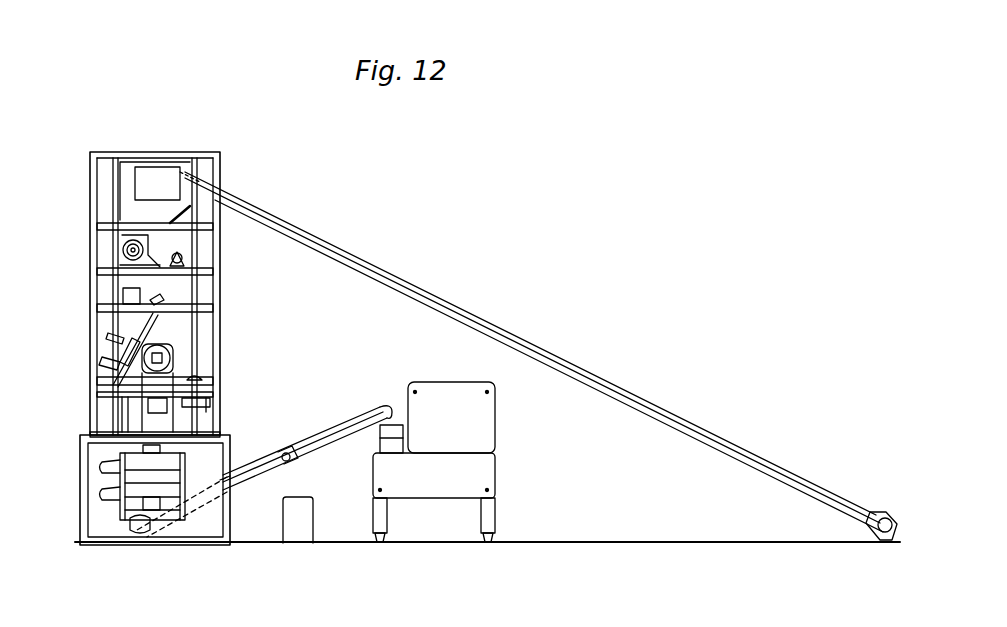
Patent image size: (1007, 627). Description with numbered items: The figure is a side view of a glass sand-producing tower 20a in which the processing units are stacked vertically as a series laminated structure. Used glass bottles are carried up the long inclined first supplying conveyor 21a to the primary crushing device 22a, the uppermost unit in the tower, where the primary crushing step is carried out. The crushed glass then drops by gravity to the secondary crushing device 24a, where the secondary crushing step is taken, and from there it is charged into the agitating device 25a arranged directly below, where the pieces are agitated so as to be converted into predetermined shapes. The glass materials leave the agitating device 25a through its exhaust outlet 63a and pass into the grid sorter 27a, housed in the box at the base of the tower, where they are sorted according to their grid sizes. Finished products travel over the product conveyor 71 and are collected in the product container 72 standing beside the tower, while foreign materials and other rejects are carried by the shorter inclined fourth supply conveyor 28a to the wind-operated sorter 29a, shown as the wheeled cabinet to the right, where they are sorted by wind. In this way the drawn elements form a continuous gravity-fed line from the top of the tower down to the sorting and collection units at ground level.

The glass sand-producing tower 20a is at (548, 263).
The first supplying conveyor 21a is at (690, 420).
The primary crushing device 22a is at (155, 180).
The secondary crushing device 24a is at (128, 343).
The agitating device 25a is at (173, 353).
The grid sorter 27a is at (153, 480).
The fourth supply conveyor 28a is at (337, 435).
The wind-operated sorter 29a is at (433, 478).
The exhaust outlet 63a is at (147, 407).
The product conveyor 71 is at (243, 478).
The product container 72 is at (295, 530).